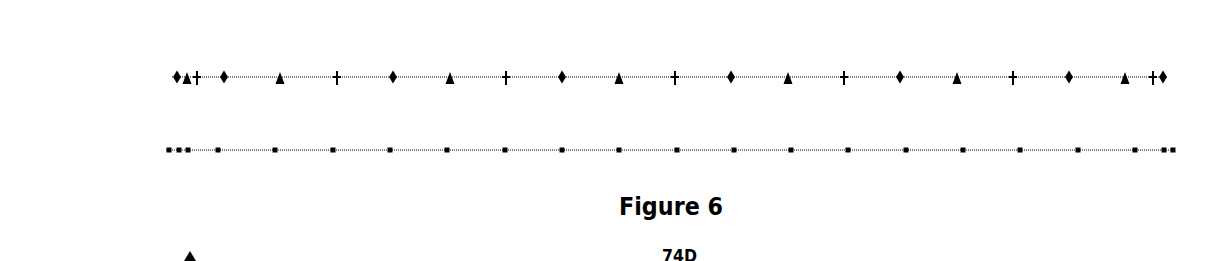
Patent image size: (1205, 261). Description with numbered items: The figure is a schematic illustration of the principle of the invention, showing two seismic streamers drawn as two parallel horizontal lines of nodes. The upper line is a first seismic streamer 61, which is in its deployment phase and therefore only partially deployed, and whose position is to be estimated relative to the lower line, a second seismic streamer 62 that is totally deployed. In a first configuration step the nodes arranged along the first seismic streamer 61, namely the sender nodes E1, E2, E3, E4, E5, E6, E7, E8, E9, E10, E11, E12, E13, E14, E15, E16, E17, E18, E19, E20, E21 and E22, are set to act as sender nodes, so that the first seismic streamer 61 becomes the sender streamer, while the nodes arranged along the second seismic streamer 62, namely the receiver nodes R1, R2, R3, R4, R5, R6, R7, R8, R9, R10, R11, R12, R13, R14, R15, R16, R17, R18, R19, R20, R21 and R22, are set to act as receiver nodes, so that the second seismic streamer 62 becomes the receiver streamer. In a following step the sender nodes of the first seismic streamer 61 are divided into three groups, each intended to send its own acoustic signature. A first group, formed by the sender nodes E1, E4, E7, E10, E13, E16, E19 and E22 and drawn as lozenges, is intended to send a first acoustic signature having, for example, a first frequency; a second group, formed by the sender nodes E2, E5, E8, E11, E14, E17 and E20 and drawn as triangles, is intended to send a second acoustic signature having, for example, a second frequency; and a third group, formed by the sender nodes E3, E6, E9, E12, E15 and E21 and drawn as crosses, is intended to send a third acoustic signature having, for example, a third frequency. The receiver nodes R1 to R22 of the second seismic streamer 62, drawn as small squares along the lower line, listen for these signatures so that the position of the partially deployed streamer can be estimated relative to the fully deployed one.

The first seismic streamer 61 is at (323, 76).
The second seismic streamer 62 is at (986, 149).
The sender node E1 is at (171, 64).
The sender node E2 is at (186, 90).
The sender node E3 is at (199, 64).
The sender node E4 is at (225, 64).
The sender node E5 is at (279, 64).
The sender node E6 is at (336, 64).
The sender node E7 is at (393, 64).
The sender node E8 is at (449, 64).
The sender node E9 is at (504, 64).
The sender node E10 is at (560, 64).
The sender node E11 is at (617, 64).
The sender node E12 is at (672, 64).
The sender node E13 is at (727, 64).
The sender node E14 is at (783, 64).
The sender node E15 is at (839, 64).
The sender node E16 is at (894, 64).
The sender node E17 is at (951, 64).
The sender node E18 is at (1006, 64).
The sender node E19 is at (1062, 64).
The sender node E20 is at (1117, 64).
The sender node E21 is at (1152, 89).
The sender node E22 is at (1176, 64).
The receiver node R1 is at (162, 138).
The receiver node R2 is at (179, 163).
The receiver node R3 is at (193, 138).
The receiver node R4 is at (226, 138).
The receiver node R5 is at (275, 138).
The receiver node R6 is at (332, 138).
The receiver node R7 is at (388, 138).
The receiver node R8 is at (445, 138).
The receiver node R9 is at (505, 138).
The receiver node R10 is at (563, 138).
The receiver node R11 is at (616, 138).
The receiver node R12 is at (674, 138).
The receiver node R13 is at (733, 138).
The receiver node R14 is at (790, 138).
The receiver node R15 is at (847, 138).
The receiver node R16 is at (902, 138).
The receiver node R17 is at (961, 138).
The receiver node R18 is at (1018, 138).
The receiver node R19 is at (1075, 138).
The receiver node R20 is at (1133, 138).
The receiver node R21 is at (1162, 163).
The receiver node R22 is at (1186, 138).